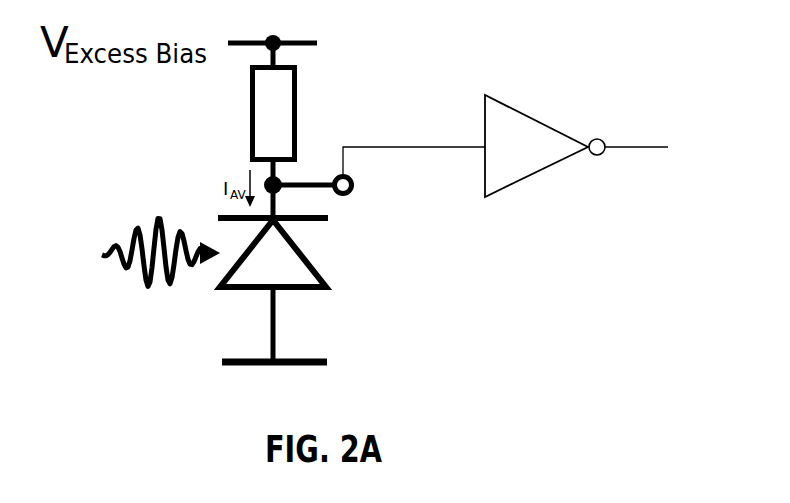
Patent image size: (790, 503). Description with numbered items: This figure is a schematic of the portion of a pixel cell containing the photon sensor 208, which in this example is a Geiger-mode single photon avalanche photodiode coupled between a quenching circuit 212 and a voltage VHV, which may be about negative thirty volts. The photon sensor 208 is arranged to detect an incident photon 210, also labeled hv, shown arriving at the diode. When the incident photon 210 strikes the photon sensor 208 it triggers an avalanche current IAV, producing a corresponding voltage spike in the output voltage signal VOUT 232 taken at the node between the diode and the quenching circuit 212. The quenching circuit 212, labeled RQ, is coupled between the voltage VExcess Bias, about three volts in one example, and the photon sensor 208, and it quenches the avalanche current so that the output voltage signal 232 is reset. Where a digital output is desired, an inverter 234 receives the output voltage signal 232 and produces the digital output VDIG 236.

The photon sensor 208 is at (325, 262).
The incident photon 210 is at (133, 322).
The quenching circuit 212 is at (251, 110).
The output voltage signal 232 is at (447, 213).
The inverter 234 is at (540, 170).
The digital output 236 is at (630, 101).